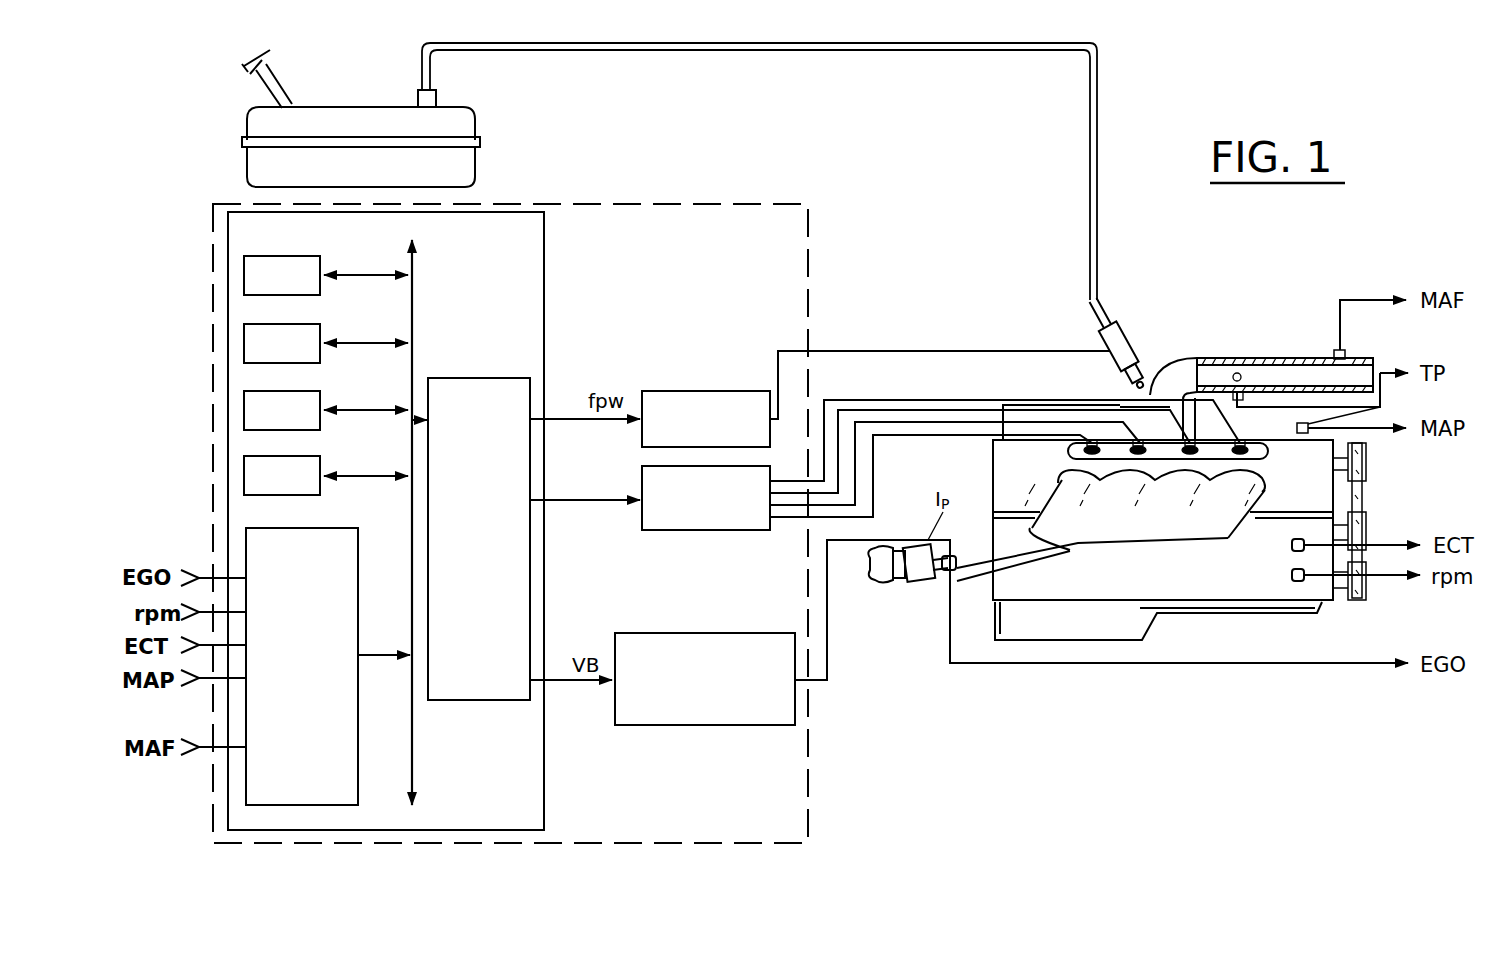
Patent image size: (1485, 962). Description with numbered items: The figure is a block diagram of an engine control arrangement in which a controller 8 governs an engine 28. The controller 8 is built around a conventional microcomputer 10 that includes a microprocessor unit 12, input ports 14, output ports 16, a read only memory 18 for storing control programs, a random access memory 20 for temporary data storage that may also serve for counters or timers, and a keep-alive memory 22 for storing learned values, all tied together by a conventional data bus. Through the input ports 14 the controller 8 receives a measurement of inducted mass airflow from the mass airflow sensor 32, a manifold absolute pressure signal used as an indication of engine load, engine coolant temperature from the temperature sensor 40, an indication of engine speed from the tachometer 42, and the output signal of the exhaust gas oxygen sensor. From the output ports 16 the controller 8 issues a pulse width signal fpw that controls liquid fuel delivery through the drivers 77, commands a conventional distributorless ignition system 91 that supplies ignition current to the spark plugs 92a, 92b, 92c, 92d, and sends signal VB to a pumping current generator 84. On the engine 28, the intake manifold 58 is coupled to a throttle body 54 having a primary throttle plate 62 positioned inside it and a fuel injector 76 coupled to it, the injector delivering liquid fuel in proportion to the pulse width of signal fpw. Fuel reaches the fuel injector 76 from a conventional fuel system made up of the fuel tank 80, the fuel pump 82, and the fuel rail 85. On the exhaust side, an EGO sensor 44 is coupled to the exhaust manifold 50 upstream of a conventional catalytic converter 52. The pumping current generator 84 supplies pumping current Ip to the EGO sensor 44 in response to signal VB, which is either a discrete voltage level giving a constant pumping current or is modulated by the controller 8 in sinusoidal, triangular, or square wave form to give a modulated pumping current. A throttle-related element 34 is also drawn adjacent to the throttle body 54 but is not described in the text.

The controller 8 is at (745, 207).
The microcomputer 10 is at (547, 264).
The microprocessor unit 12 is at (244, 276).
The input ports 14 is at (360, 578).
The output ports 16 is at (462, 378).
The read only memory 18 is at (244, 344).
The random access memory 20 is at (244, 411).
The keep-alive memory 22 is at (244, 477).
The engine 28 is at (1392, 494).
The mass airflow sensor 32 is at (1346, 352).
The throttle body / throttle plate 34 is at (1252, 397).
The temperature sensor 40 is at (1292, 545).
The tachometer 42 is at (1292, 575).
The EGO sensor 44 is at (946, 573).
The exhaust manifold 50 is at (1122, 546).
The catalytic converter 52 is at (906, 582).
The throttle body 54 is at (1176, 353).
The intake manifold 58 is at (1003, 440).
The primary throttle plate 62 is at (1237, 373).
The fuel injector 76 is at (1116, 343).
The drivers 77 is at (718, 391).
The fuel tank 80 is at (333, 107).
The fuel pump 82 is at (440, 100).
The pumping current generator 84 is at (682, 726).
The fuel rail 85 is at (1110, 95).
The distributorless ignition system 91 is at (680, 531).
The spark plug 92a is at (1090, 445).
The spark plug 92b is at (1138, 445).
The spark plug 92c is at (1196, 453).
The spark plug 92d is at (1277, 457).